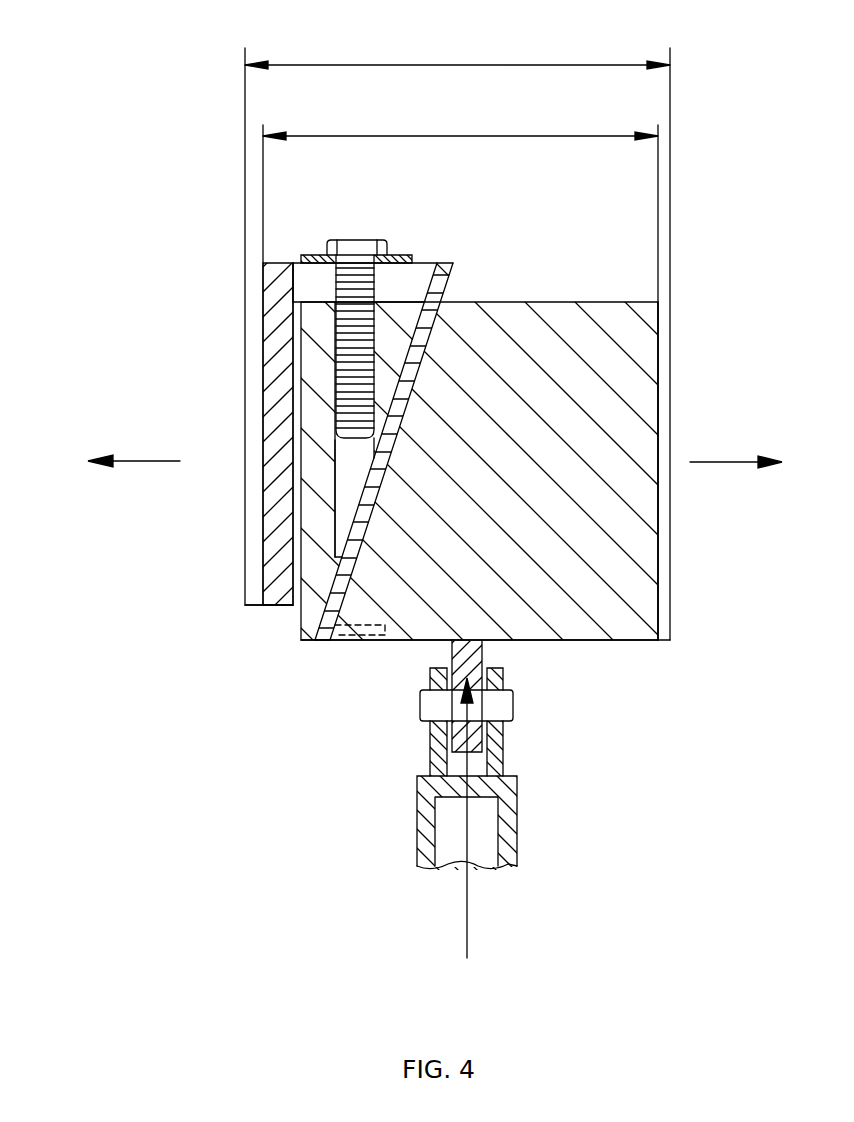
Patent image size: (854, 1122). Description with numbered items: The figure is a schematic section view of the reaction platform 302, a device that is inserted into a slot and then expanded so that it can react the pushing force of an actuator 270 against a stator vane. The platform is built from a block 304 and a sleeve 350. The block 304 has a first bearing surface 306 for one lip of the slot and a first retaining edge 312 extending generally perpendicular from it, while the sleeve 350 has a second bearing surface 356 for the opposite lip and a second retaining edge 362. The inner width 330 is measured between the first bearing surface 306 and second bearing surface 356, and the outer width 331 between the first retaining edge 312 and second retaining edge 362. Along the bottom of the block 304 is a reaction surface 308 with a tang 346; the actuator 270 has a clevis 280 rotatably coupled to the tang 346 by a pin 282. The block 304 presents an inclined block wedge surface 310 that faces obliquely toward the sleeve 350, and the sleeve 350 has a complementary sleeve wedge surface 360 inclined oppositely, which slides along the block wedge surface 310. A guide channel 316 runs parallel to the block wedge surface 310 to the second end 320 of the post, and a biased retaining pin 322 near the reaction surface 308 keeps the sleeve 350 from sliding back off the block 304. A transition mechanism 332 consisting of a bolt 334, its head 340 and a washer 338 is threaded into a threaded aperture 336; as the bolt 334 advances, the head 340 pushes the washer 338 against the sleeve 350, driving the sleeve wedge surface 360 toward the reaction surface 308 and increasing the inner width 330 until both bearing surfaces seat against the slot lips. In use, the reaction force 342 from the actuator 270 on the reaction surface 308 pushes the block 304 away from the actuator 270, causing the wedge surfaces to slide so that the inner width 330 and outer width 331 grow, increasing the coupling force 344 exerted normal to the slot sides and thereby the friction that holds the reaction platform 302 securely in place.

The actuator 270 is at (517, 835).
The clevis 280 is at (505, 742).
The pin 282 is at (514, 691).
The reaction platform 302 is at (128, 393).
The block 304 is at (623, 534).
The first bearing surface 306 is at (661, 340).
The reaction surface 308 is at (640, 641).
The block wedge surface 310 is at (455, 305).
The first retaining edge 312 is at (663, 399).
The guide channel 316 is at (328, 623).
The second end of post 320 is at (312, 642).
The retaining pin 322 is at (368, 637).
The inner width 330 is at (390, 135).
The outer width 331 is at (338, 64).
The transition mechanism 332 is at (312, 296).
The bolt 334 is at (355, 362).
The threaded aperture 336 is at (337, 495).
The washer 338 is at (310, 255).
The head 340 is at (348, 220).
The reaction force 342 is at (468, 915).
The coupling force 344 is at (128, 462).
The tang 346 is at (472, 743).
The sleeve 350 is at (282, 290).
The second bearing surface 356 is at (263, 320).
The sleeve wedge surface 360 is at (452, 273).
The second retaining edge 362 is at (255, 570).